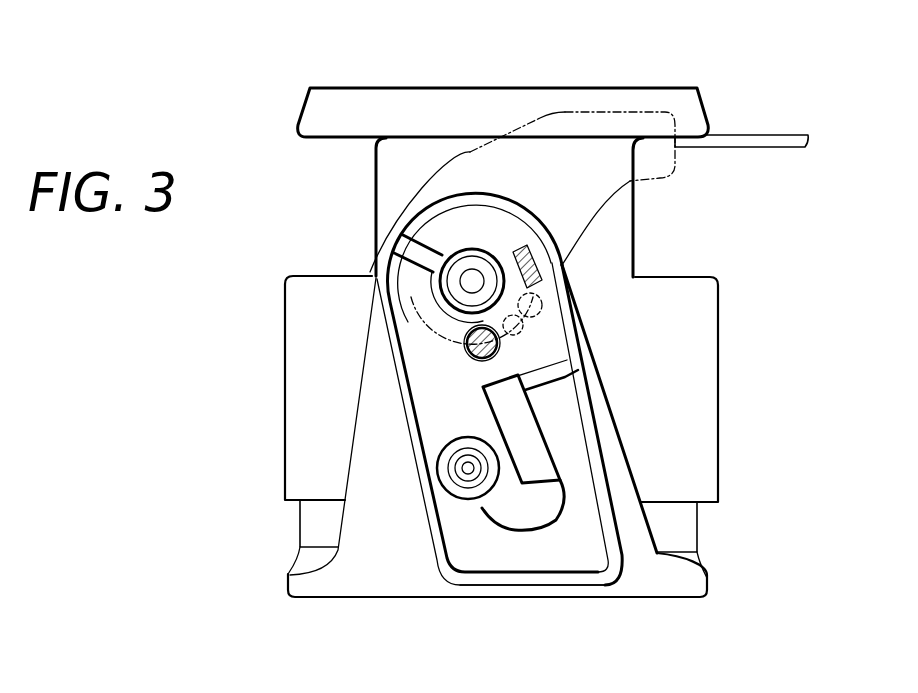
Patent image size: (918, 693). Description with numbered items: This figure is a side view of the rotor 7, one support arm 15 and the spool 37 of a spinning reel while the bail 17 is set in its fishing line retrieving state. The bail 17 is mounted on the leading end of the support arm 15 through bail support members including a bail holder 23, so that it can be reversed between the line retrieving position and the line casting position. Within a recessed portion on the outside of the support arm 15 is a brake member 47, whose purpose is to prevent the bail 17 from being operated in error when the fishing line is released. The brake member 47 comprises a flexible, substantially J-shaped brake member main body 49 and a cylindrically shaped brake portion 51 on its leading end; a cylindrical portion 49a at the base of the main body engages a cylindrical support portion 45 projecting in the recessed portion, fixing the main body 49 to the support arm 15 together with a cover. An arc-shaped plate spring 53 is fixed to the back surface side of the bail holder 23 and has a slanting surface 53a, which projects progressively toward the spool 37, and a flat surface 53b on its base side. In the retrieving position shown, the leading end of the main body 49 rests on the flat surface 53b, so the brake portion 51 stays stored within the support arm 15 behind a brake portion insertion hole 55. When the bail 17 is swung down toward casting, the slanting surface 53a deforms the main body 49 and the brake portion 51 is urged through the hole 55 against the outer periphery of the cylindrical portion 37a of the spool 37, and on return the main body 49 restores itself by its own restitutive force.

The rotor 7 is at (688, 563).
The support arm 15 is at (610, 443).
The bail 17 is at (766, 140).
The bail holder 23 is at (604, 118).
The spool 37 is at (384, 165).
The cylindrical portion 37a is at (300, 383).
The cylindrical support portion 45 is at (462, 471).
The brake member 47 is at (527, 530).
The brake member main body 49 is at (535, 428).
The cylindrical portion 49a is at (460, 492).
The brake portion 51 is at (445, 338).
The arc-shaped plate spring 53 is at (400, 276).
The slanting surface 53a is at (405, 316).
The flat surface 53b is at (526, 318).
The brake portion insertion hole 55 is at (470, 352).